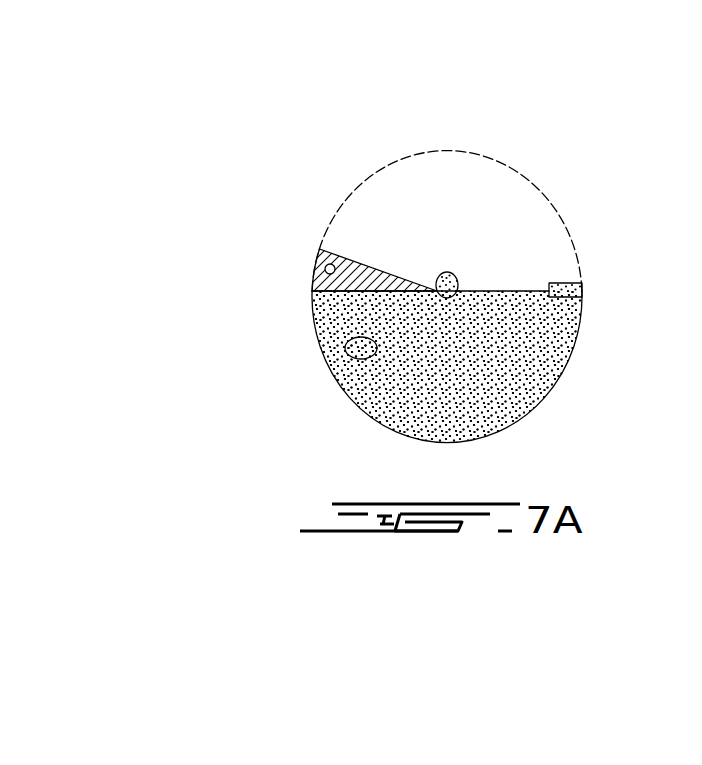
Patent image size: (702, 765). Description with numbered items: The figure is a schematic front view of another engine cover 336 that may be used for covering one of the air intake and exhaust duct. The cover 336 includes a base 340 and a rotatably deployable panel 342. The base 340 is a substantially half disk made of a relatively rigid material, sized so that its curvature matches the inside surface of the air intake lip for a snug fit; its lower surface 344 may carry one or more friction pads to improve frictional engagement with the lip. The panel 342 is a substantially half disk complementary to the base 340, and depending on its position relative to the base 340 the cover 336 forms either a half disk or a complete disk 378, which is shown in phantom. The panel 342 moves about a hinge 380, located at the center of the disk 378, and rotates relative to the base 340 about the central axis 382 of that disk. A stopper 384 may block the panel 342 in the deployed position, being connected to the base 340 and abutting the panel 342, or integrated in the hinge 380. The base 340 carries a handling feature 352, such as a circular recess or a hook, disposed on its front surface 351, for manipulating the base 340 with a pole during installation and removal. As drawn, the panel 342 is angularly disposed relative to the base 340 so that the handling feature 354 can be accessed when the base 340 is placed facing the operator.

The cover 336 is at (260, 340).
The base 340 is at (527, 347).
The rotatably deployable panel 342 is at (354, 262).
The lower surface 344 is at (532, 412).
The front surface 351 is at (457, 406).
The handling feature 352 is at (350, 352).
The handling feature 354 is at (326, 269).
The complete disk 378 is at (426, 152).
The hinge 380 is at (456, 274).
The central axis 382 is at (459, 289).
The stopper 384 is at (572, 289).